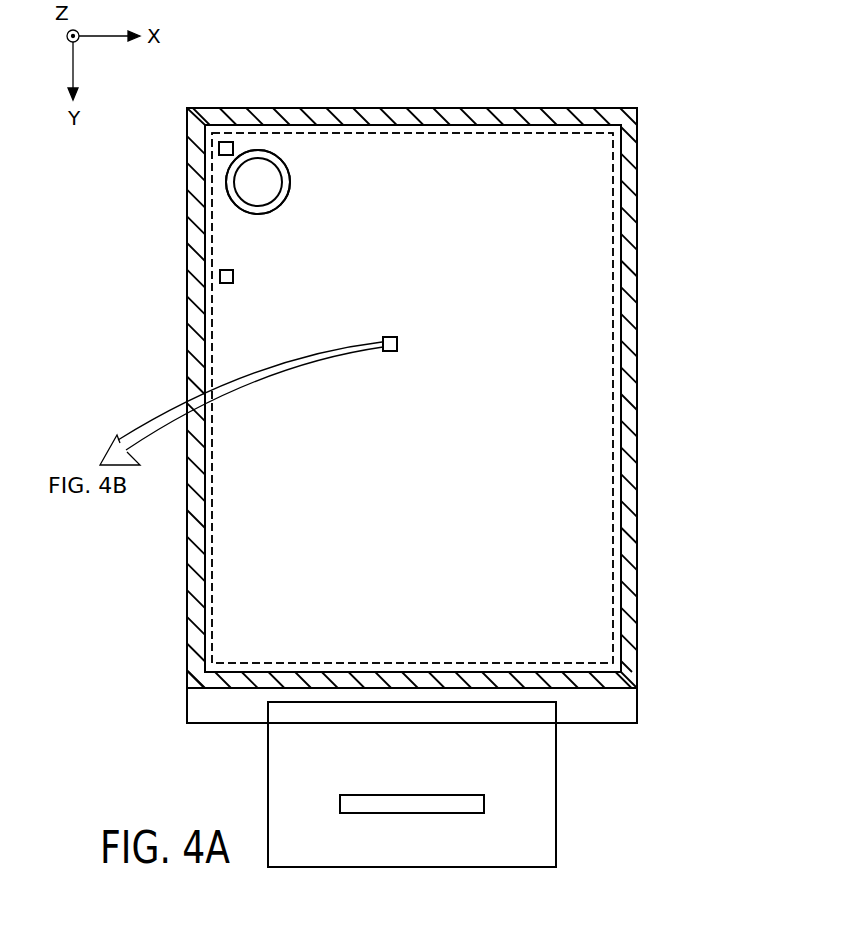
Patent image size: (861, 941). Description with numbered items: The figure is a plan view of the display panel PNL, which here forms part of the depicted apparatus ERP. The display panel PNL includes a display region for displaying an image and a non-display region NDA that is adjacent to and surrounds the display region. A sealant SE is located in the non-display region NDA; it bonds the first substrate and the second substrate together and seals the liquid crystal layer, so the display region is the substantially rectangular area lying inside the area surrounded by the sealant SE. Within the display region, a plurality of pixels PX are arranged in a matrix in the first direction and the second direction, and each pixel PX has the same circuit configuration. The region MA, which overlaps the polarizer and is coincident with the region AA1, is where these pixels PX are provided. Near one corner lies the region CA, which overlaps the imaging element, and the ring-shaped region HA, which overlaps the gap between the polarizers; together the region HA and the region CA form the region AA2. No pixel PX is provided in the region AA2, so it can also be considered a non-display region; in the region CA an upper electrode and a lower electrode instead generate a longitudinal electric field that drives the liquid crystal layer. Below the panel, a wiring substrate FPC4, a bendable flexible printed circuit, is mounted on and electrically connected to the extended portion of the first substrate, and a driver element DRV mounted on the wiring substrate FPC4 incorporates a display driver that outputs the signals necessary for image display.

The electronic apparatus ERP is at (647, 63).
The display panel PNL is at (655, 117).
The non-display region NDA is at (553, 108).
The sealant SE is at (476, 108).
The region AA1 is at (425, 133).
The region MA is at (372, 155).
The region HA is at (227, 187).
The region AA2 is at (288, 162).
The region CA is at (260, 158).
The pixel PX is at (225, 140).
The wiring substrate FPC4 is at (488, 867).
The driver element DRV is at (371, 813).